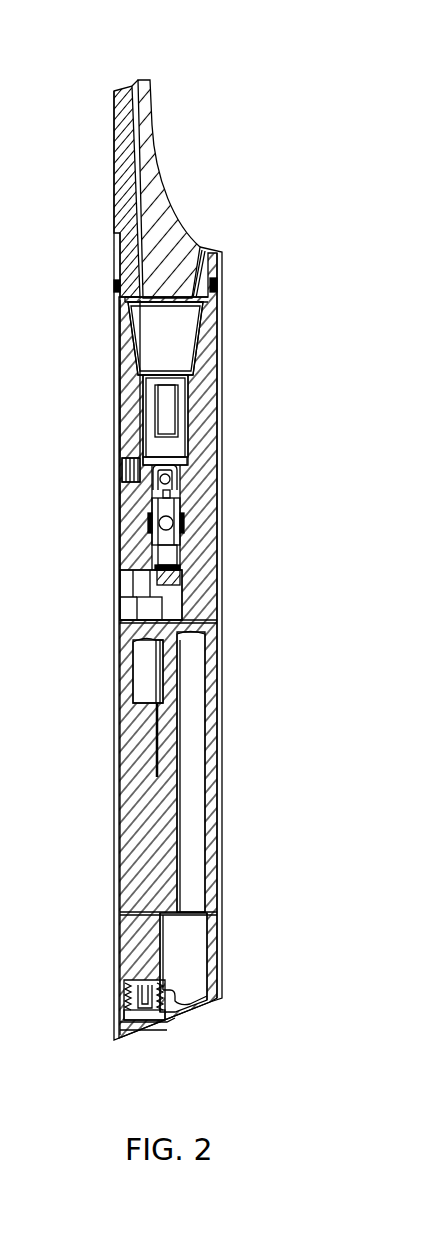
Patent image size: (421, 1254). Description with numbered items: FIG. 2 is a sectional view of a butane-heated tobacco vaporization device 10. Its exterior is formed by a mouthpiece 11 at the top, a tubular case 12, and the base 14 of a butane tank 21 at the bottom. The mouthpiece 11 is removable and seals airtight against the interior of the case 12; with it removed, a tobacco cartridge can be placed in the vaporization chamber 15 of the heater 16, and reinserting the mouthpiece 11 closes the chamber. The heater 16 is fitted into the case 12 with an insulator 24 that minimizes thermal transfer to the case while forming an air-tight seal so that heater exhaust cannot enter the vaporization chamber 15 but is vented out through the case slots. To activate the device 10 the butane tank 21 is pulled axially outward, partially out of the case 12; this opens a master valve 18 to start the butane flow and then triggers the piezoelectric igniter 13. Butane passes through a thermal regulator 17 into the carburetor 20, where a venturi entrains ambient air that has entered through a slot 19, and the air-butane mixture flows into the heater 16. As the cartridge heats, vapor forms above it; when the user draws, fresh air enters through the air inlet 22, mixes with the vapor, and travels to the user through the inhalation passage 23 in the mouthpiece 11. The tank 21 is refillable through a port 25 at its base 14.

The device 10 is at (240, 277).
The mouthpiece 11 is at (114, 137).
The tubular case 12 is at (222, 330).
The piezoelectric igniter 13 is at (142, 765).
The base 14 is at (220, 998).
The vaporization chamber 15 is at (153, 340).
The heater 16 is at (192, 383).
The thermal regulator 17 is at (128, 453).
The master valve 18 is at (142, 613).
The slot 19 is at (182, 535).
The carburetor 20 is at (187, 487).
The butane tank 21 is at (193, 707).
The air inlet 22 is at (195, 298).
The inhalation passage 23 is at (131, 82).
The insulator 24 is at (130, 400).
The port 25 is at (145, 1033).